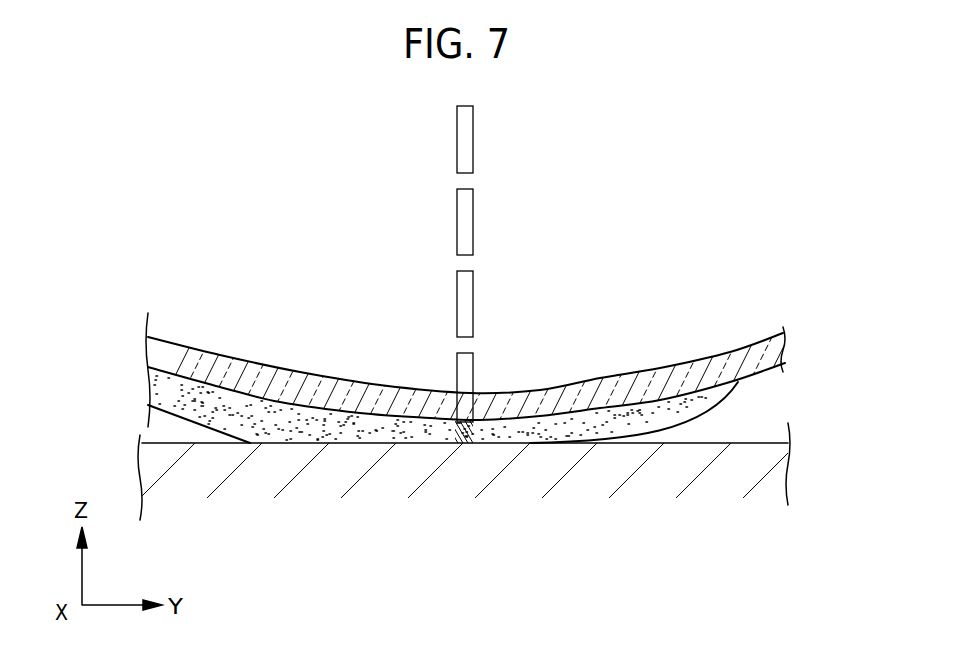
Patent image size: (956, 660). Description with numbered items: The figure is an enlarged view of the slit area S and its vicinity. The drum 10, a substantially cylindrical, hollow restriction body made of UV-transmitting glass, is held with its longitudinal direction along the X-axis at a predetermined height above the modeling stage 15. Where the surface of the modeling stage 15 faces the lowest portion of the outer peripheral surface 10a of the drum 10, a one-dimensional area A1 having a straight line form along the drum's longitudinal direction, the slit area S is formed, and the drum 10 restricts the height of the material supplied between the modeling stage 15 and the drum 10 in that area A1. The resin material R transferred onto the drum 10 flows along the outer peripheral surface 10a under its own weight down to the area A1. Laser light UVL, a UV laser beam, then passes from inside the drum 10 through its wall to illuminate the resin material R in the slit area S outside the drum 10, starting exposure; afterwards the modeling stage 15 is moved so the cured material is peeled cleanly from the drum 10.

The drum 10 is at (218, 367).
The outer peripheral surface 10a is at (283, 405).
The modeling stage 15 is at (708, 475).
The area having a straight line form A1 is at (448, 430).
The slit area S is at (450, 440).
The resin material R is at (713, 407).
The laser light UVL is at (475, 214).